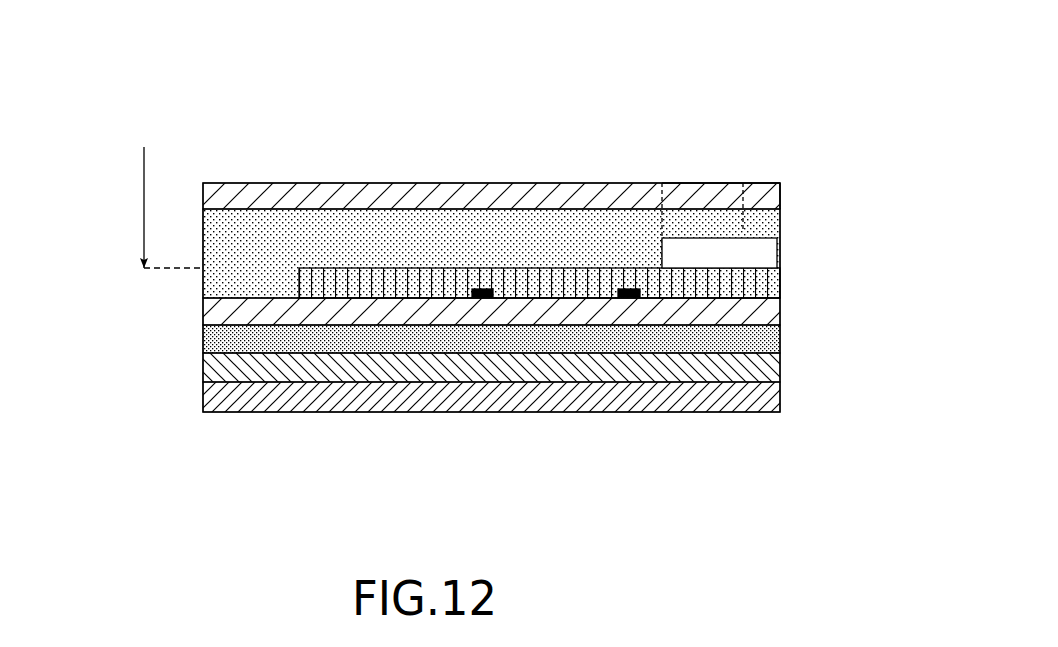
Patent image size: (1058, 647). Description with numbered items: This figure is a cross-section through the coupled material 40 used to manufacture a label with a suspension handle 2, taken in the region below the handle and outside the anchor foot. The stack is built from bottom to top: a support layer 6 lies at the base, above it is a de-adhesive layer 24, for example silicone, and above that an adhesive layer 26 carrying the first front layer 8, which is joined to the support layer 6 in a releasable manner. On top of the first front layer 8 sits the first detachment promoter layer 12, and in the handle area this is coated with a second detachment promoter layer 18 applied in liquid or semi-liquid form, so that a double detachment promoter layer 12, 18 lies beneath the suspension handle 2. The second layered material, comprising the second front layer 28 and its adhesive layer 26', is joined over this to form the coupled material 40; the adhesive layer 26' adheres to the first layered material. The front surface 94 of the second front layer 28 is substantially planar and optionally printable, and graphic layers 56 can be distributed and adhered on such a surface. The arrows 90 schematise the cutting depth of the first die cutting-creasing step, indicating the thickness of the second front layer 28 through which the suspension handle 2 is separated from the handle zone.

The suspension handle 2 is at (708, 182).
The support layer 6 is at (720, 415).
The first front layer 8 is at (785, 310).
The first detachment promoter layer 12 is at (785, 278).
The second detachment promoter layer 18 is at (763, 253).
The de-adhesive layer 24 is at (202, 368).
The adhesive layer 26 is at (548, 396).
The adhesive layer 26' is at (468, 166).
The second front layer 28 is at (780, 187).
The coupled material 40 is at (402, 98).
The graphic layer 56 is at (485, 298).
The arrows 90 is at (142, 203).
The front surface 94 is at (512, 182).